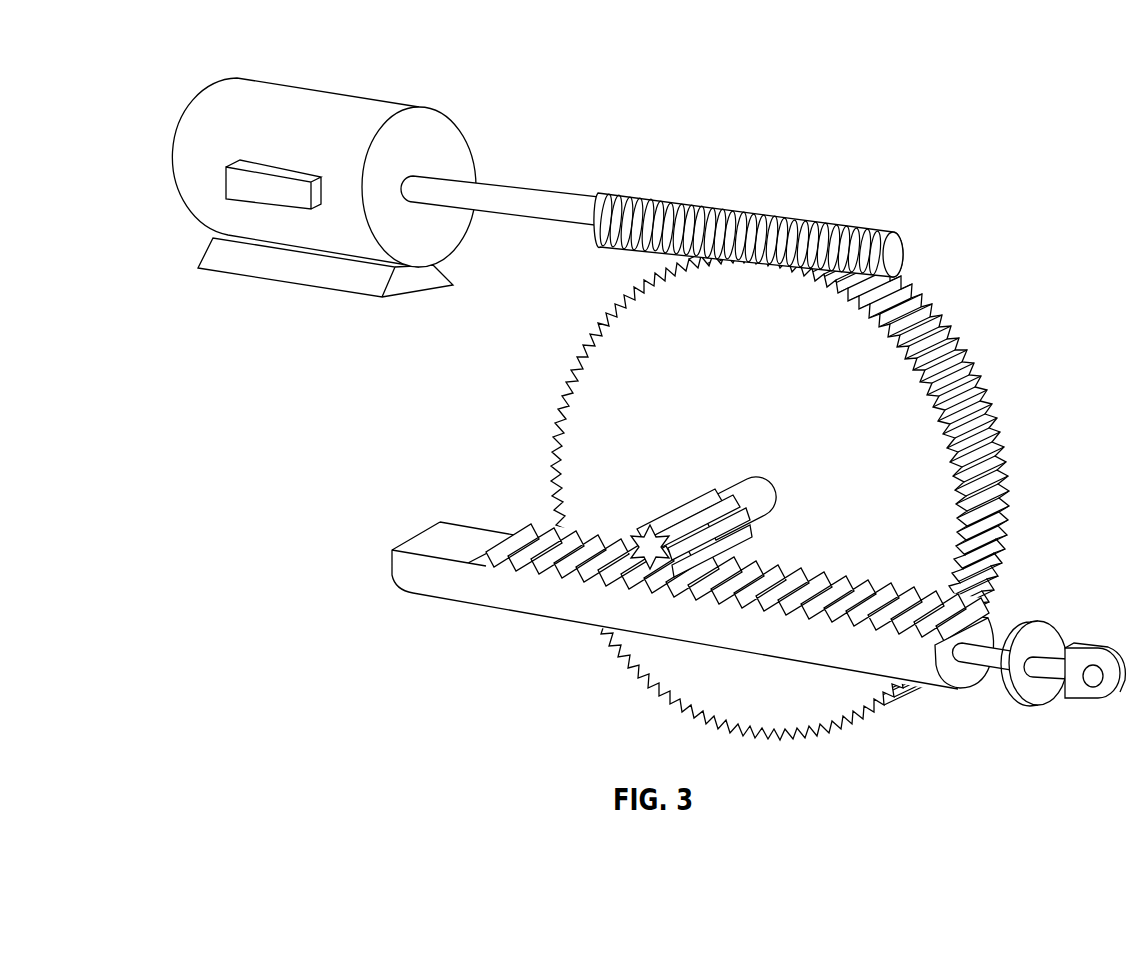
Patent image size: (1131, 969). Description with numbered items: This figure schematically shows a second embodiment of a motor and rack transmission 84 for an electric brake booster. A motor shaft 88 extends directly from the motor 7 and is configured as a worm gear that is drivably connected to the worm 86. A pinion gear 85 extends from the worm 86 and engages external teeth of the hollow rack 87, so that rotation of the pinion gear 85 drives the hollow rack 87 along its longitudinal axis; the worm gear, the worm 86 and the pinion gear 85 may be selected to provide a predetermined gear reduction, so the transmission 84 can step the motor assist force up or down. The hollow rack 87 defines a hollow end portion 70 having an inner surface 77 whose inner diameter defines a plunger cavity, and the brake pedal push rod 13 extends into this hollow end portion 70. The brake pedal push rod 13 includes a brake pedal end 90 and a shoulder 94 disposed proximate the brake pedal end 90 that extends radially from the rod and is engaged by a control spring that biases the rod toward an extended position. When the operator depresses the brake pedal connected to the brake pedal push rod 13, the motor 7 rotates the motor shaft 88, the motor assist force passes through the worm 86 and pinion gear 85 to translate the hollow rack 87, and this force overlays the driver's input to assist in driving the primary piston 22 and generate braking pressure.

The motor 7 is at (348, 79).
The motor shaft 88 is at (556, 185).
The transmission 84 is at (864, 207).
The worm 86 is at (949, 301).
The hollow rack 87 is at (489, 519).
The pinion gear 85 is at (676, 490).
The hollow end portion 70 is at (980, 630).
The inner surface 77 is at (978, 684).
The shoulder 94 is at (1000, 695).
The brake pedal end 90 is at (1087, 699).
The brake pedal push rod 13 is at (1039, 716).
The primary piston 22 is at (398, 537).